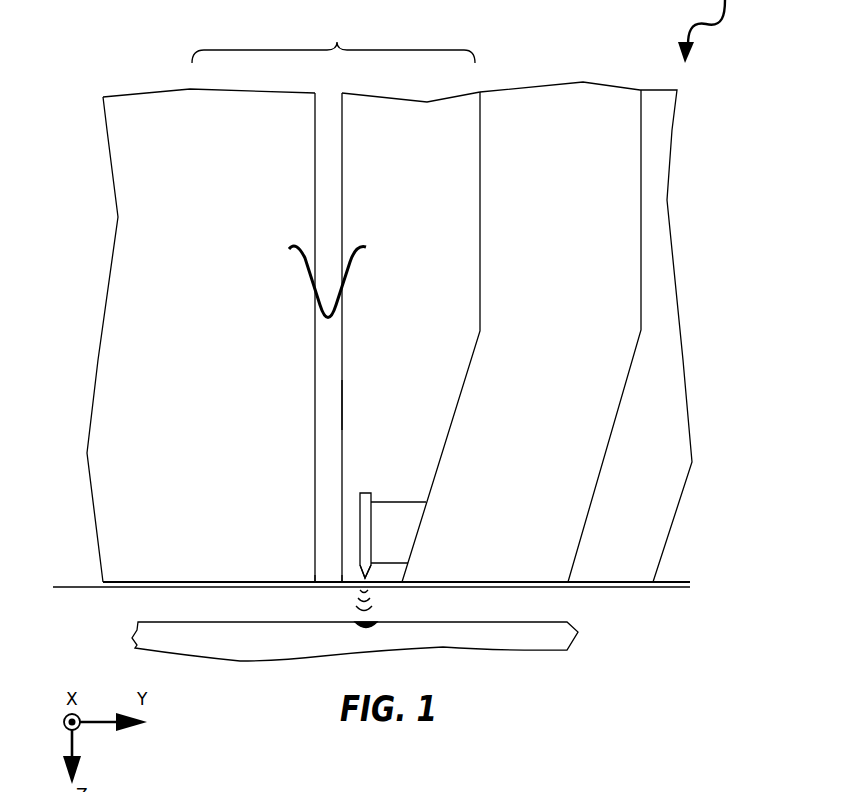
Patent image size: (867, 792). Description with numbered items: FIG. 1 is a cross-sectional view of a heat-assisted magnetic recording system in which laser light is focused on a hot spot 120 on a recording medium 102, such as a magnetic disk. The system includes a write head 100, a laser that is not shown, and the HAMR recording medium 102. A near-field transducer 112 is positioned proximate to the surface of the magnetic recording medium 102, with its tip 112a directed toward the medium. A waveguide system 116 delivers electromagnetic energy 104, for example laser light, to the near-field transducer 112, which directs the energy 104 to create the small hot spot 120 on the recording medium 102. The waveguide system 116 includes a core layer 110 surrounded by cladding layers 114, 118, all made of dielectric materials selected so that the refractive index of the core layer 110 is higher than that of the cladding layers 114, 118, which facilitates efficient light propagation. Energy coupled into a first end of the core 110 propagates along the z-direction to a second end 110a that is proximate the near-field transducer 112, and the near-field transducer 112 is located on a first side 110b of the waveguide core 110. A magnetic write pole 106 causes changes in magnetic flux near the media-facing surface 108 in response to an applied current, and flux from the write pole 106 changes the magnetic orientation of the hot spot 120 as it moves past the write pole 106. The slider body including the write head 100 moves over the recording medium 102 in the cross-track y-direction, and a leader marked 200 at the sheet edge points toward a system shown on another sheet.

The write head 100 is at (710, 31).
The recording medium 102 is at (180, 638).
The electromagnetic energy 104 is at (302, 262).
The magnetic write pole 106 is at (575, 83).
The media-facing surface 108 is at (607, 587).
The core layer 110 is at (332, 93).
The second end of the core 110a is at (325, 568).
The first side of the waveguide core 110b is at (343, 407).
The near-field transducer 112 is at (375, 565).
The probe tip 112a is at (357, 587).
The cladding layer 114 is at (210, 90).
The waveguide system 116 is at (333, 38).
The cladding layer 118 is at (377, 104).
The hot spot 120 is at (368, 627).
The system 200 is at (723, 791).